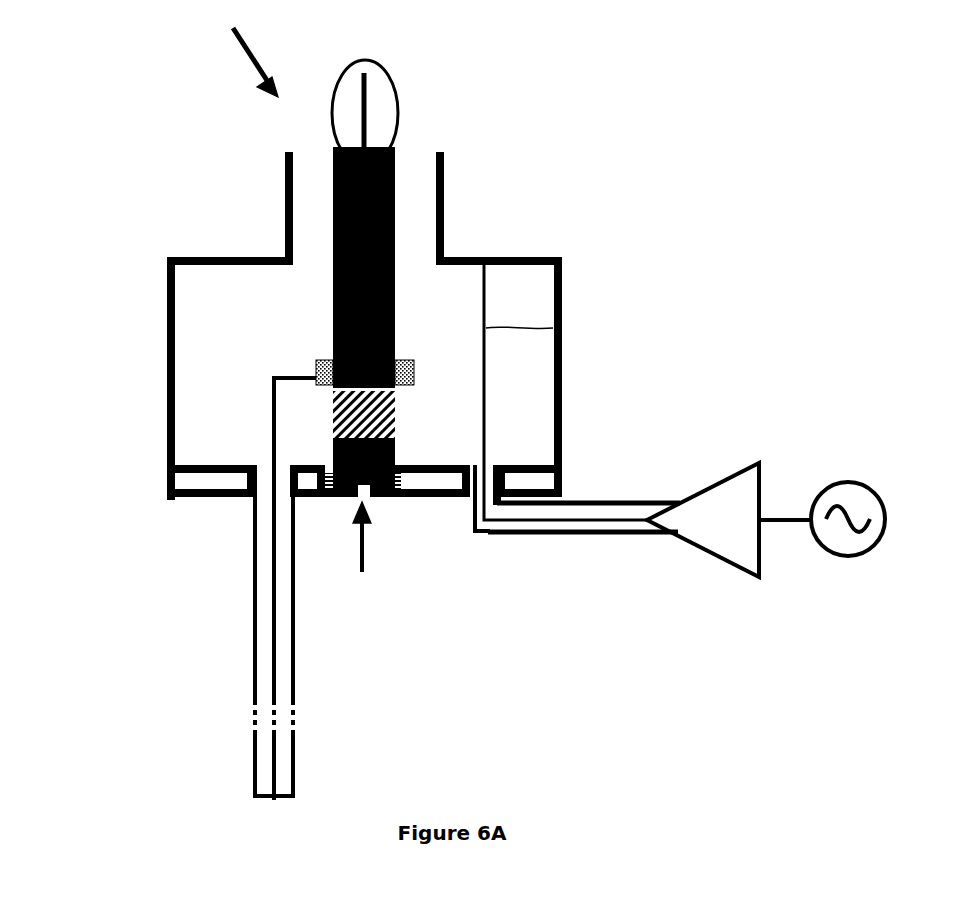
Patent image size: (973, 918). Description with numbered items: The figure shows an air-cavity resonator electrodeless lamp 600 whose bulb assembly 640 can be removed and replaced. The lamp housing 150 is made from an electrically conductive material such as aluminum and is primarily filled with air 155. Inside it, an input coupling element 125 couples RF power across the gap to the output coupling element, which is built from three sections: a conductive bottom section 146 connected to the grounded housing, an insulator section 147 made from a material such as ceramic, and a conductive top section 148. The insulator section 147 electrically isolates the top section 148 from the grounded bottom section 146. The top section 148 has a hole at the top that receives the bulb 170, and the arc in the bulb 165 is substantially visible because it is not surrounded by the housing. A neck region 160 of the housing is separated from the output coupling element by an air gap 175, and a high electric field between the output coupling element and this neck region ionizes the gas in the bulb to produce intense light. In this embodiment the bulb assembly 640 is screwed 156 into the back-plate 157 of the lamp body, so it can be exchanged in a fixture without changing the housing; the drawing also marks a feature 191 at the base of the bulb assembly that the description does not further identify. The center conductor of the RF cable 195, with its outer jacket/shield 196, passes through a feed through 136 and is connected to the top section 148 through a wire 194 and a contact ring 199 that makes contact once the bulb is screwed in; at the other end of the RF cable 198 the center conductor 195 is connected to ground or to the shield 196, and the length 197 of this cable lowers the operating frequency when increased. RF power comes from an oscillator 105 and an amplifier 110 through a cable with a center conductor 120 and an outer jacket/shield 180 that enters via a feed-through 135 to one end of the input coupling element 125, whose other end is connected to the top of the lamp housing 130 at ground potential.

The air-cavity resonator electrodeless lamp 600 is at (242, 49).
The bulb 170 is at (378, 65).
The arc in the bulb 165 is at (368, 107).
The air gap 175 is at (310, 172).
The neck region 160 is at (283, 220).
The air 155 is at (230, 282).
The top section of the output coupling element 148 is at (333, 308).
The contact ring 199 is at (316, 361).
The wire 194 is at (273, 404).
The insulator section of the output coupling element 147 is at (350, 420).
The bottom section of the output coupling element 146 is at (397, 445).
The back-plate 157 is at (167, 485).
The feed through 136 is at (263, 472).
The center conductor of the RF cable 195 is at (268, 660).
The outer jacket/shield of the RF cable 196 is at (295, 692).
The length of the RF cable 197 is at (295, 720).
The other end of the RF cable 198 is at (258, 798).
The screw connection 156 is at (387, 498).
The feed inlet 191 is at (325, 498).
The bulb assembly 640 is at (365, 553).
The top of the lamp housing 130 is at (483, 258).
The lamp housing 150 is at (562, 288).
The input coupling element 125 is at (562, 330).
The feed-through 135 is at (463, 533).
The outer jacket/shield of the input RF cable 180 is at (550, 535).
The center conductor of the input RF cable 120 is at (612, 520).
The amplifier 110 is at (698, 550).
The oscillator 105 is at (868, 557).